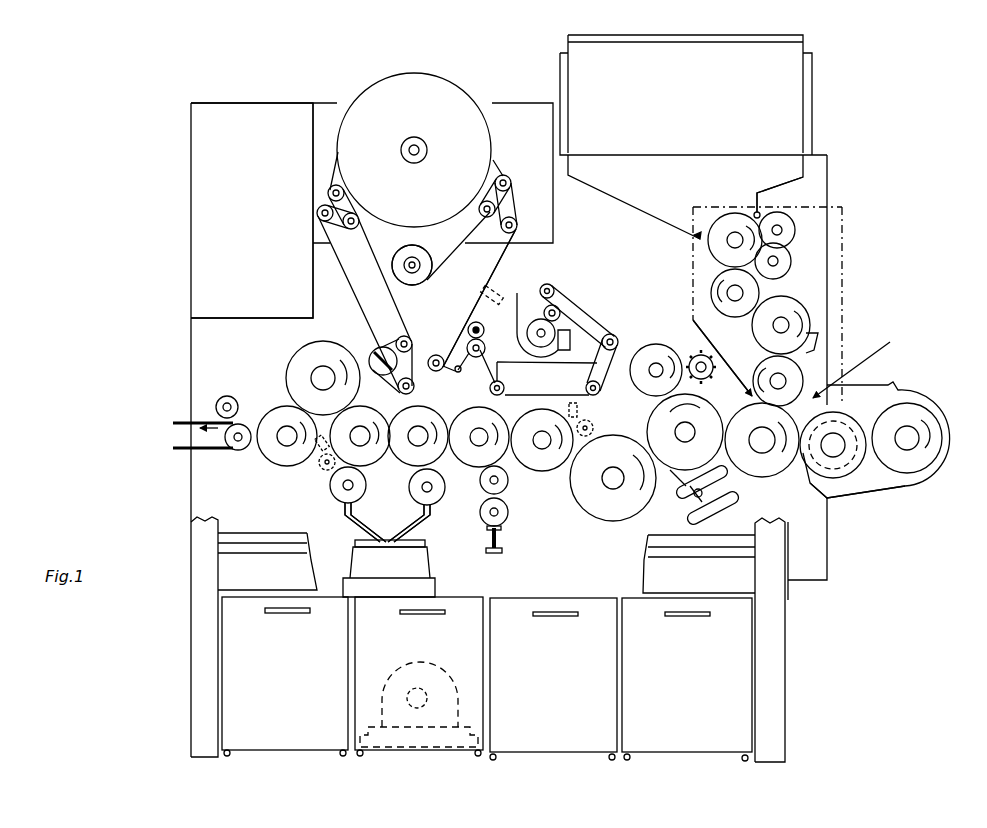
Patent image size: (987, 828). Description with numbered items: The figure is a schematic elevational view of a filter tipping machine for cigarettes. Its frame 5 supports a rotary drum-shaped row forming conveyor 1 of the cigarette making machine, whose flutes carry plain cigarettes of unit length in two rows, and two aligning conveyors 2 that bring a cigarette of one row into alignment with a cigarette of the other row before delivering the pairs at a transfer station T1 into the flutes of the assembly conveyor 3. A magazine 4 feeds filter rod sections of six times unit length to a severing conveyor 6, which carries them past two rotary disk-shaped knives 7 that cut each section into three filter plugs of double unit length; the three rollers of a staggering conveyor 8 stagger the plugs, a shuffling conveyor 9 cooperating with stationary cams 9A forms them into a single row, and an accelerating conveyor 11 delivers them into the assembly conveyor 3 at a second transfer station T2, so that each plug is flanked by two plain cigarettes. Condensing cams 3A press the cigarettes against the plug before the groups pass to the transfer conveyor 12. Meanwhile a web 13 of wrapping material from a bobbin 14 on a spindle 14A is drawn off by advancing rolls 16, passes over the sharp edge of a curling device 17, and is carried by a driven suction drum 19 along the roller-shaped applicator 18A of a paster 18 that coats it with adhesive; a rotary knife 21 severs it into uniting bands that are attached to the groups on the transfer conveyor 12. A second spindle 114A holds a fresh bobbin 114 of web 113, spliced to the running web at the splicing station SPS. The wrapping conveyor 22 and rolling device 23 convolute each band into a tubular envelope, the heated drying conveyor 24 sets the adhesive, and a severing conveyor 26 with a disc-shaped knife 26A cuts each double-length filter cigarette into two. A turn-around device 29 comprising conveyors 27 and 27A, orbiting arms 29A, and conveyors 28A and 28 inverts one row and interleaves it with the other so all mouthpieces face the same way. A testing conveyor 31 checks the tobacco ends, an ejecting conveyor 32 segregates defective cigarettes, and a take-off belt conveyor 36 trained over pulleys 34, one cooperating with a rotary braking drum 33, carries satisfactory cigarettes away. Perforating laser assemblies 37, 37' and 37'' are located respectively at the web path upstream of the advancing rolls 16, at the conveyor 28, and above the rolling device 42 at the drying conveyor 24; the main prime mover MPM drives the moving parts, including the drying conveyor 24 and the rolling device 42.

The row forming conveyor 1 is at (923, 417).
The aligning conveyors 2 is at (851, 427).
The assembly conveyor 3 is at (803, 470).
The condensing cams 3A is at (826, 499).
The magazine 4 is at (795, 119).
The frame 5 is at (188, 324).
The severing conveyor 6 is at (760, 213).
The rotary disk-shaped knives 7 is at (785, 262).
The staggering conveyor 8 is at (755, 293).
The shuffling conveyor 9 is at (808, 320).
The stationary cams 9A is at (820, 336).
The accelerating conveyor 11 is at (800, 370).
The transfer conveyor 12 is at (728, 466).
The web of wrapping material 13 is at (502, 253).
The bobbin 14 is at (413, 284).
The spindle 14A is at (414, 249).
The advancing rolls 16 is at (476, 358).
The curling device 17 is at (460, 372).
The paster 18 is at (534, 317).
The roller-shaped applicator 18A is at (558, 294).
The suction drum 19 is at (658, 350).
The rotary knife 21 is at (698, 355).
The wrapping conveyor 22 is at (591, 508).
The rolling device 23 is at (683, 511).
The drying conveyor 24 is at (551, 472).
The severing conveyor 26 is at (506, 484).
The rotary disc-shaped knife 26A is at (487, 522).
The rotary drum-shaped conveyor 27 is at (440, 470).
The second rotary drum-shaped conveyor 27A is at (433, 505).
The fourth rotary drum-shaped conveyor 28 is at (360, 470).
The further rotary drum-shaped conveyor 28A is at (344, 505).
The turn-around device 29 is at (336, 515).
The orbiting arms 29A is at (358, 522).
The testing conveyor 31 is at (308, 356).
The ejecting conveyor 32 is at (280, 410).
The rotary braking drum 33 is at (230, 396).
The pulleys 34 is at (238, 450).
The take-off belt conveyor 36 is at (184, 420).
The laser assembly 37 is at (524, 281).
The laser assembly 37' is at (300, 470).
The laser assembly 37'' is at (602, 404).
The rolling device 42 is at (324, 472).
The web 113 is at (340, 256).
The fresh bobbin 114 is at (430, 80).
The second spindle 114A is at (416, 139).
The splicing station SPS is at (422, 354).
The main prime mover MPM is at (416, 656).
The transfer station T1 is at (862, 366).
The second transfer station T2 is at (750, 399).